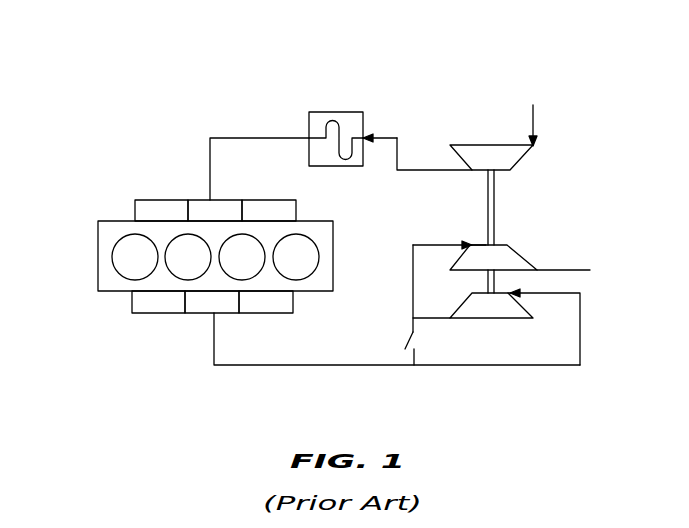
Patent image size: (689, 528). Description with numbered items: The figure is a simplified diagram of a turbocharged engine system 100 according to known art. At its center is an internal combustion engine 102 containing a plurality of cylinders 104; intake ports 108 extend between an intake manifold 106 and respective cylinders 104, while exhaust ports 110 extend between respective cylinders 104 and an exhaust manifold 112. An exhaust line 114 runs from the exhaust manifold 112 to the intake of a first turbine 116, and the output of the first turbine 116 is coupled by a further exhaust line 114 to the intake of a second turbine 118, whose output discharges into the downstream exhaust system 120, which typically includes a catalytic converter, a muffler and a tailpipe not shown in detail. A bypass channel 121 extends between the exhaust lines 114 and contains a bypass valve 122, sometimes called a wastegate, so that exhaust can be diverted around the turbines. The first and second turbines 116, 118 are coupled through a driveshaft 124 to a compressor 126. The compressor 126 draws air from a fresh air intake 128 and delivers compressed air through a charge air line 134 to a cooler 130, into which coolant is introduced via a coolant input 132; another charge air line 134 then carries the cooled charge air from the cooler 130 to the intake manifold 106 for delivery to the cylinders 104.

The turbocharged engine system 100 is at (223, 66).
The internal combustion engine 102 is at (86, 206).
The cylinders 104 is at (128, 257).
The intake manifold 106 is at (143, 200).
The intake ports 108 is at (187, 208).
The exhaust ports 110 is at (187, 302).
The exhaust manifold 112 is at (140, 313).
The exhaust line 114 is at (413, 257).
The first turbine 116 is at (508, 308).
The second turbine 118 is at (500, 247).
The downstream exhaust system 120 is at (570, 270).
The bypass channel 121 is at (424, 347).
The bypass valve 122 is at (410, 337).
The driveshaft 124 is at (489, 203).
The compressor 126 is at (488, 152).
The fresh air intake 128 is at (534, 118).
The cooler 130 is at (358, 117).
The coolant input 132 is at (337, 108).
The charge air line 134 is at (228, 137).